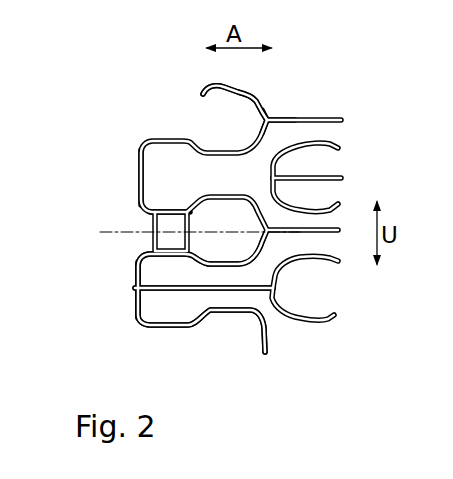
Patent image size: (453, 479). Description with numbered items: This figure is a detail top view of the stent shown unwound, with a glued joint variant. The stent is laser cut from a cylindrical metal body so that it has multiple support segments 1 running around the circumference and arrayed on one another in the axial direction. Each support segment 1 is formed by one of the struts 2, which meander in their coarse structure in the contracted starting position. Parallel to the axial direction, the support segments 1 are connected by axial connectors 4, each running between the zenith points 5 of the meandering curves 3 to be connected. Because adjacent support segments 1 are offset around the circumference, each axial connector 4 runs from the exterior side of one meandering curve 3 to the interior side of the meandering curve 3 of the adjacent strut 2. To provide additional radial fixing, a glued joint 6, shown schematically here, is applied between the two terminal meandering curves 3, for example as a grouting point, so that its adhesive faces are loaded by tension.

The support segment 1 is at (267, 358).
The strut 2 is at (272, 99).
The meandering curve 3 is at (234, 91).
The axial connector 4 is at (318, 175).
The zenith point 5 is at (138, 178).
The glued joint 6 is at (162, 219).